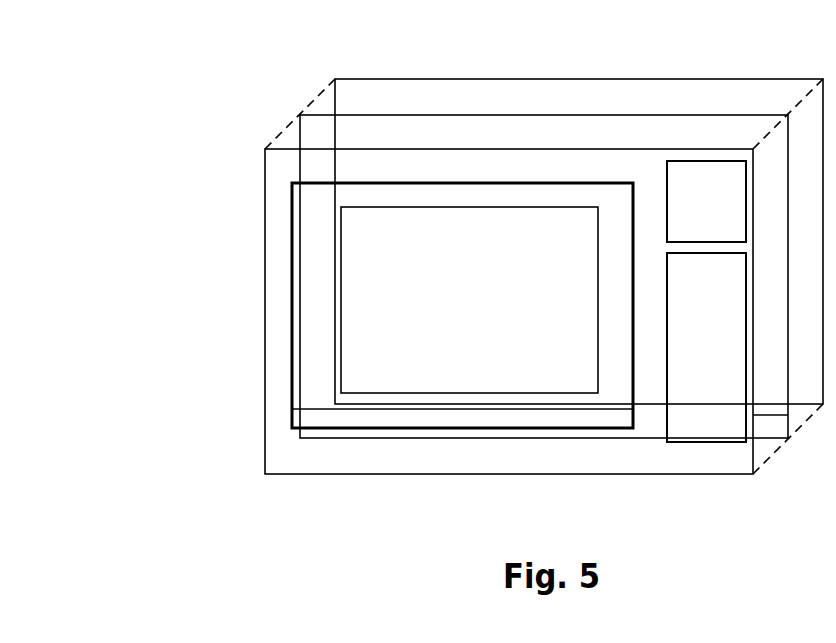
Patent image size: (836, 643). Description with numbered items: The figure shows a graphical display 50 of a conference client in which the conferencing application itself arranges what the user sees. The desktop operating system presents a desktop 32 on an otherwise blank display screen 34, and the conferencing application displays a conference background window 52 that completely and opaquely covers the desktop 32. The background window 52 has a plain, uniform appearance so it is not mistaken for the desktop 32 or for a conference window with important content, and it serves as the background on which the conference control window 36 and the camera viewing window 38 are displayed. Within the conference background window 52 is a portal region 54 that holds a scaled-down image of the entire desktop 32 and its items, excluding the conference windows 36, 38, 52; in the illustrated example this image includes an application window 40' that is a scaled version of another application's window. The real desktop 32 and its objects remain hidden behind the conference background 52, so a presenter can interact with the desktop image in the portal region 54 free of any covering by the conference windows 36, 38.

The display screen 34 is at (360, 78).
The desktop 32 is at (318, 113).
The conference background window 52 is at (283, 148).
The portal region 54 is at (290, 243).
The application window image 40' is at (469, 300).
The camera viewing window 38 is at (695, 234).
The conference control window 36 is at (695, 380).
The graphical display 50 is at (365, 523).